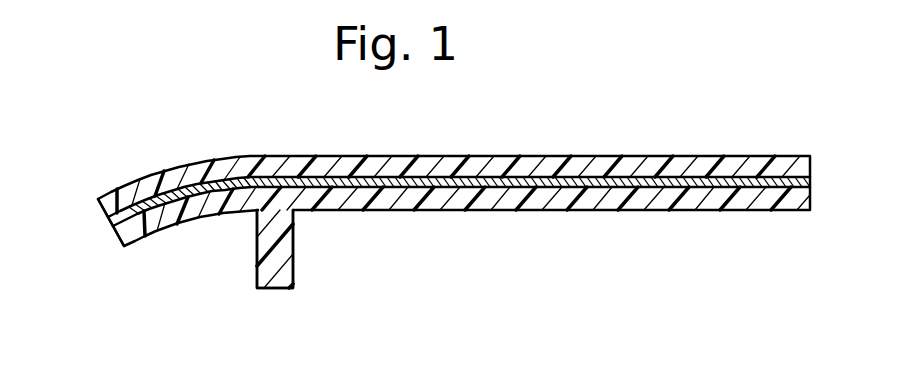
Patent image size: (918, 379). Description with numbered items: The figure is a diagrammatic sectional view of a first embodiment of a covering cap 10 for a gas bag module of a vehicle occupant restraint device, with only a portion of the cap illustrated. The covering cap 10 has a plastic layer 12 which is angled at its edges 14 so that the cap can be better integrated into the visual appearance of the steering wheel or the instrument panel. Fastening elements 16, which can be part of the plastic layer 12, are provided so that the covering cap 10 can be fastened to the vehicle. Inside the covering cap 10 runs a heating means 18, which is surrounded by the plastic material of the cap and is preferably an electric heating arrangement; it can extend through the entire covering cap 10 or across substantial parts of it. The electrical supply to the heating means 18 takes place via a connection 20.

The covering cap 10 is at (517, 140).
The plastic layer 12 is at (637, 166).
The edges 14 is at (98, 203).
The fastening elements 16 is at (287, 270).
The heating means 18 is at (743, 188).
The connection 20 is at (177, 297).